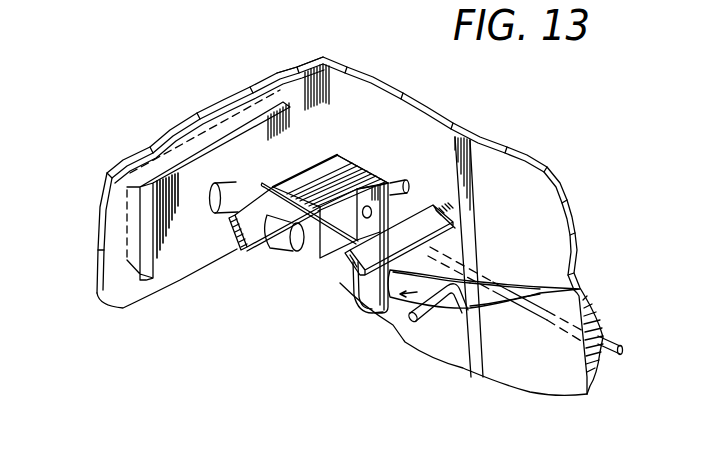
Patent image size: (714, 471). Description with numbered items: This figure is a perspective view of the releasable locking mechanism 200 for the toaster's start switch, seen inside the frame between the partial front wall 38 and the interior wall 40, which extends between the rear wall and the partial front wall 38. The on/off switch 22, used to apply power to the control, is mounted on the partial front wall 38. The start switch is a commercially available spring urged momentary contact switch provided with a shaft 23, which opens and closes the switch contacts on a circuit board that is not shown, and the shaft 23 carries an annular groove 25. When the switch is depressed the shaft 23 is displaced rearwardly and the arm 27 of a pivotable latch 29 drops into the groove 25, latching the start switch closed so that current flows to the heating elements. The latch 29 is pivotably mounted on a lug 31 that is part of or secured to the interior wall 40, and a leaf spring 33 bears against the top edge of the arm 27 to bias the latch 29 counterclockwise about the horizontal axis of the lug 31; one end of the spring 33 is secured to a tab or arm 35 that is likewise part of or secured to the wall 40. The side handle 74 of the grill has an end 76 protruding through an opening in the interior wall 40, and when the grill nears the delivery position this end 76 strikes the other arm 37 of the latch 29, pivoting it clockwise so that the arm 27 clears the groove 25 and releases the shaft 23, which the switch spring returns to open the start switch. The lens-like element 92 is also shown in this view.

The hearing aid assembly 200 is at (234, 332).
The on/off switch 22 is at (203, 177).
The shaft 23 is at (290, 248).
The annular groove 25 is at (257, 252).
The arm 27 is at (358, 166).
The pivotable latch 29 is at (333, 152).
The lug 31 is at (407, 192).
The leaf spring 33 is at (325, 258).
The tab or arm 35 is at (453, 207).
The arm 37 is at (368, 298).
The partial front wall 38 is at (288, 76).
The interior wall 40 is at (400, 113).
The side handle 74 is at (530, 285).
The end of handle 76 is at (413, 318).
The lens 92 is at (502, 298).